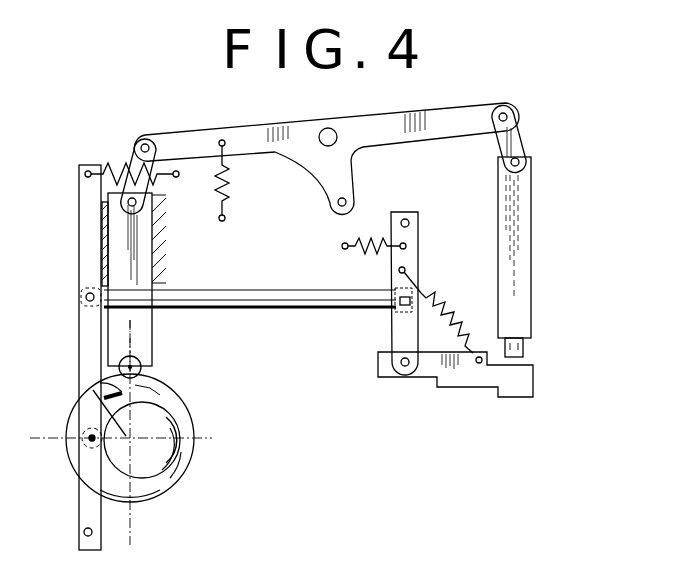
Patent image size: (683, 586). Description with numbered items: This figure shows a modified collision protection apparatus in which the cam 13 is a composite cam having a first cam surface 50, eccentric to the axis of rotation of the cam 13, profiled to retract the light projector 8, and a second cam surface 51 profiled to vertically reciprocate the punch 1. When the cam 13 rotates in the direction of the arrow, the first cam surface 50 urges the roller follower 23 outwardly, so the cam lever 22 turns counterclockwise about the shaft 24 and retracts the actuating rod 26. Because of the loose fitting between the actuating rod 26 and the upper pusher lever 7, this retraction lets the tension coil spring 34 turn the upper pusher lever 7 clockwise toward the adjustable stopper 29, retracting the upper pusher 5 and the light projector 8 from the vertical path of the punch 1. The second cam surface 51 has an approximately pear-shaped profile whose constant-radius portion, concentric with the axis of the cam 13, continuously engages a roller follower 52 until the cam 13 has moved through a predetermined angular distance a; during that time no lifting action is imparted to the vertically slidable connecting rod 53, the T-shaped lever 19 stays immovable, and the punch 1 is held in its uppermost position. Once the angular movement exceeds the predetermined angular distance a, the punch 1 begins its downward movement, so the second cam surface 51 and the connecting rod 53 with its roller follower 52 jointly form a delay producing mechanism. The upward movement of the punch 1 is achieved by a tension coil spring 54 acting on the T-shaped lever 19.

The punch 1 is at (527, 273).
The upper pusher 5 is at (480, 356).
The upper pusher lever 7 is at (417, 258).
The light projector 8 is at (525, 389).
The cam 13 is at (190, 460).
The T-shaped lever 19 is at (180, 135).
The cam lever 22 is at (80, 346).
The roller follower 23 is at (84, 447).
The shaft 24 is at (84, 531).
The actuating rod 26 is at (283, 291).
The stopper 29 is at (343, 334).
The tension coil spring 34 is at (372, 241).
The first cam surface 50 is at (172, 408).
The second cam surface 51 is at (155, 501).
The roller follower 52 is at (143, 375).
The connecting rod 53 is at (146, 238).
The tension coil spring 54 is at (228, 186).
The predetermined angular distance a is at (100, 384).